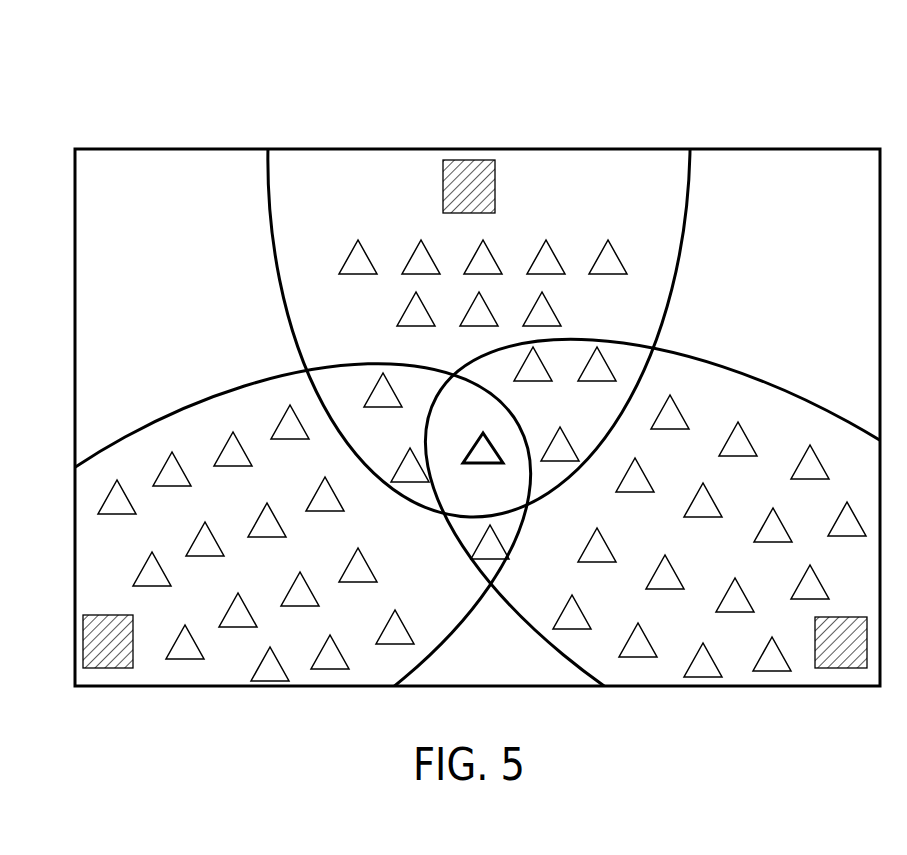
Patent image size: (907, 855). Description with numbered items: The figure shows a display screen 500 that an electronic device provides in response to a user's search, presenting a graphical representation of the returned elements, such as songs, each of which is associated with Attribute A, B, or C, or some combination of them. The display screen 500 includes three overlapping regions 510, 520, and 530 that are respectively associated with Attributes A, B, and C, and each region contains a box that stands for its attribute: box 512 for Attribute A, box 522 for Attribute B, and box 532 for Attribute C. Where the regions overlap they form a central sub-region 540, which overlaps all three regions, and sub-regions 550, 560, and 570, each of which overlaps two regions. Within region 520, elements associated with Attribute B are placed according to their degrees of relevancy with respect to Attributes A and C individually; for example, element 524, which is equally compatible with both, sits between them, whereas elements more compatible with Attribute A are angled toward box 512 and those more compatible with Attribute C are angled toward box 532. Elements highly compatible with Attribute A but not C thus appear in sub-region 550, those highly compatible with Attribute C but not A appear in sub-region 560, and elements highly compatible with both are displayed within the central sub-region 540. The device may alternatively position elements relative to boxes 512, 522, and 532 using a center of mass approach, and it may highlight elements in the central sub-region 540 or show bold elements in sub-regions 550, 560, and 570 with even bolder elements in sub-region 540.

The display screen 500 is at (694, 123).
The region 510 is at (683, 238).
The box 512 is at (495, 195).
The region 520 is at (243, 388).
The box 522 is at (110, 615).
The element 524 is at (341, 503).
The region 530 is at (740, 375).
The box 532 is at (833, 617).
The central sub-region 540 is at (494, 411).
The sub-region 550 is at (404, 441).
The sub-region 560 is at (512, 530).
The sub-region 570 is at (575, 411).